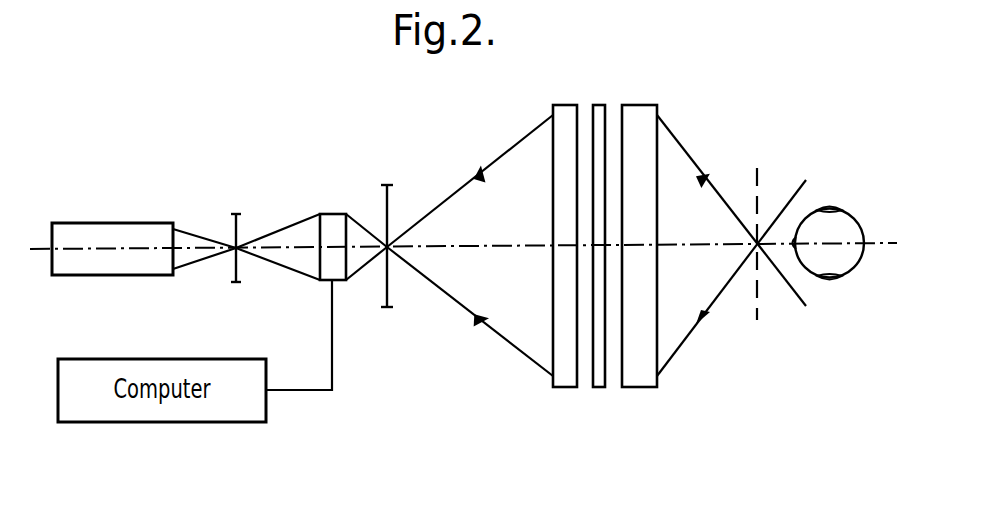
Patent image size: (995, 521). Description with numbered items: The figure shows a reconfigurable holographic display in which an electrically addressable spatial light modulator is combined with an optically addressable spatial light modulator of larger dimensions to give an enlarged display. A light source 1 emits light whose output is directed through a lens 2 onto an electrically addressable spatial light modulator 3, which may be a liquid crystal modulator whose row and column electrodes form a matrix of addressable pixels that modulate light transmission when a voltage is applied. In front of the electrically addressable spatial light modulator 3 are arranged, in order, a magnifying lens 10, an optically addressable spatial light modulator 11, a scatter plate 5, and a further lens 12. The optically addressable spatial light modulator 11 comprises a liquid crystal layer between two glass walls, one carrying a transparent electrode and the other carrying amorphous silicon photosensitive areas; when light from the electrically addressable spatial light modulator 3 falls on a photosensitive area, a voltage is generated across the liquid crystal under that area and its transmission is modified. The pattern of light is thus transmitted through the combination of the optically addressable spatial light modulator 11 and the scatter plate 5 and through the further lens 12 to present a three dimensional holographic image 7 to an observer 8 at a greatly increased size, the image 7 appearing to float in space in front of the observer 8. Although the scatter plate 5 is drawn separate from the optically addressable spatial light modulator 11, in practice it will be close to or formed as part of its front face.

The light source 1 is at (96, 222).
The lens 2 is at (237, 213).
The electrically addressable spatial light modulator 3 is at (326, 213).
The magnifying lens 10 is at (387, 184).
The optically addressable spatial light modulator 11 is at (561, 104).
The scatter plate 5 is at (599, 104).
The further lens 12 is at (640, 104).
The holographic image 7 is at (757, 176).
The observer 8 is at (841, 220).